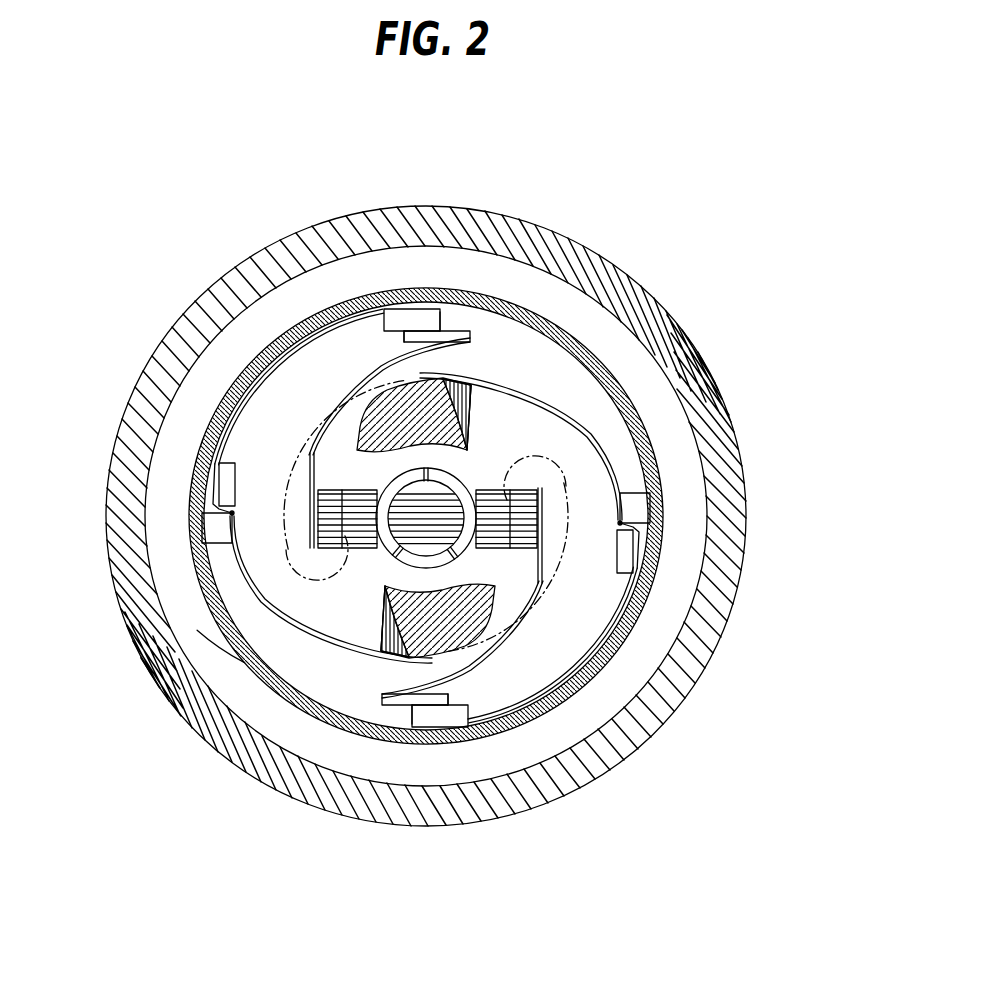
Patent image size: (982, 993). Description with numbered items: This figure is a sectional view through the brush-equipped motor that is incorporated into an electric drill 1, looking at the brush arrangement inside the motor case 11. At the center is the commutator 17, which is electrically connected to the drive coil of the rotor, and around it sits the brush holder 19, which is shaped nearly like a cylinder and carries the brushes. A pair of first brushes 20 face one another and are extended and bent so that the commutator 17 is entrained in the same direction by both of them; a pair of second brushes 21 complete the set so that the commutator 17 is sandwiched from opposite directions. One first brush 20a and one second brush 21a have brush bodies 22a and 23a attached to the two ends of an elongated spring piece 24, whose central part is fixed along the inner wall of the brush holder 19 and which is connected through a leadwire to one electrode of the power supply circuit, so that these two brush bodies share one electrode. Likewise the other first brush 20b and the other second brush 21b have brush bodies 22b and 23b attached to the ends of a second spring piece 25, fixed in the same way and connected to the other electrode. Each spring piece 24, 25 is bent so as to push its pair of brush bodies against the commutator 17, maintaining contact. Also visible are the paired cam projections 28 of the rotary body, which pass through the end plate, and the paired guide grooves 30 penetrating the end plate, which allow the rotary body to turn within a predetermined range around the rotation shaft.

The electric drill 1 is at (509, 217).
The motor case 11 is at (606, 364).
The commutator 17 is at (280, 693).
The brush holder 19 is at (222, 646).
The first brushes 20 is at (422, 515).
The one first brush 20a is at (303, 497).
The other first brush 20b is at (548, 540).
The second brushes 21 is at (455, 520).
The one second brush 21a is at (383, 657).
The other second brush 21b is at (463, 383).
The brush body 22a is at (231, 522).
The brush body 22b is at (622, 497).
The brush body 23a is at (389, 586).
The brush body 23b is at (463, 450).
The spring piece 24 is at (343, 397).
The spring piece 25 is at (508, 638).
The cam projections 28 is at (407, 372).
The guide grooves 30 is at (287, 562).